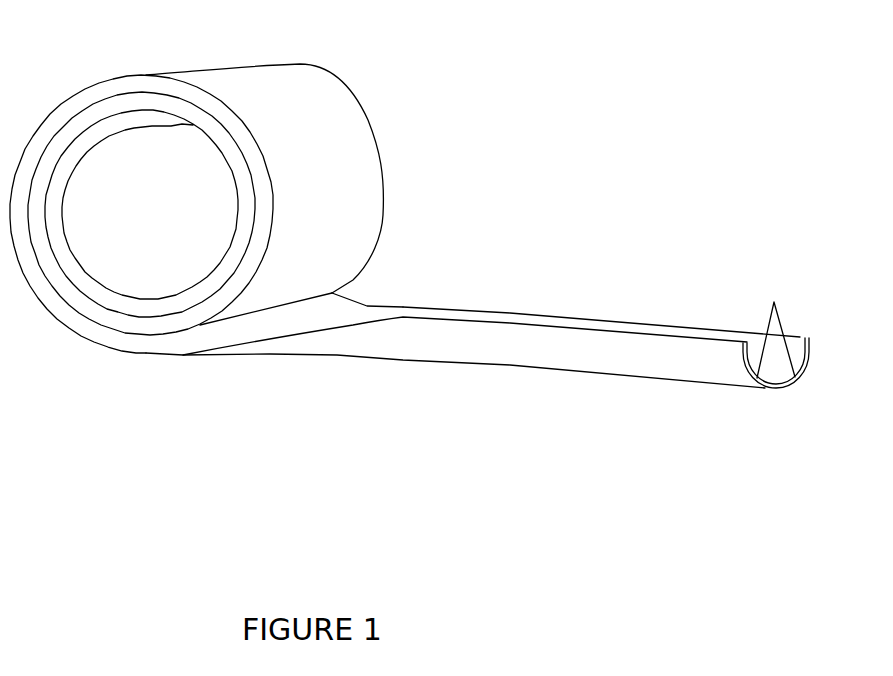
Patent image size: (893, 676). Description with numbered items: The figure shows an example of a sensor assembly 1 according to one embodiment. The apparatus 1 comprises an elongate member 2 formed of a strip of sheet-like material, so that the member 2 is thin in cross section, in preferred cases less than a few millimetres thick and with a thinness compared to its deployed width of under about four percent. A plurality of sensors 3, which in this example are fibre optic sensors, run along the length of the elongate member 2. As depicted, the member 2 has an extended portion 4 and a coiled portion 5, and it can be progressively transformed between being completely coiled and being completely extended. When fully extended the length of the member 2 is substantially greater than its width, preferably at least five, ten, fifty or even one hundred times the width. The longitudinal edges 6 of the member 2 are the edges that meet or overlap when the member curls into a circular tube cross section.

The sensor assembly 1 is at (443, 48).
The elongate member 2 is at (712, 478).
The sensors 3 is at (768, 322).
The extended portion 4 is at (473, 420).
The coiled portion 5 is at (295, 433).
The edges 6 is at (352, 326).